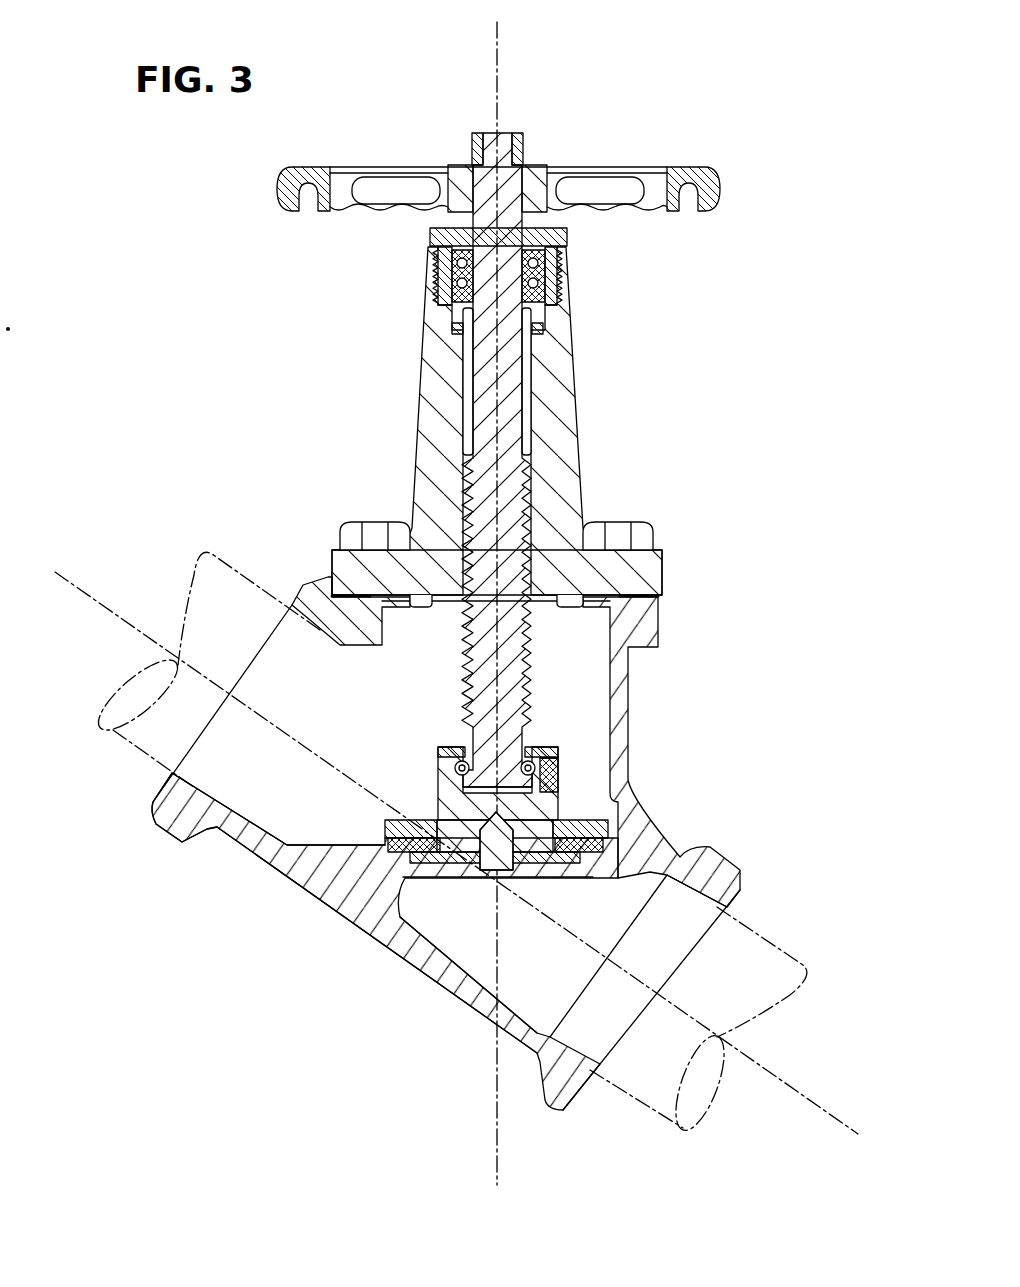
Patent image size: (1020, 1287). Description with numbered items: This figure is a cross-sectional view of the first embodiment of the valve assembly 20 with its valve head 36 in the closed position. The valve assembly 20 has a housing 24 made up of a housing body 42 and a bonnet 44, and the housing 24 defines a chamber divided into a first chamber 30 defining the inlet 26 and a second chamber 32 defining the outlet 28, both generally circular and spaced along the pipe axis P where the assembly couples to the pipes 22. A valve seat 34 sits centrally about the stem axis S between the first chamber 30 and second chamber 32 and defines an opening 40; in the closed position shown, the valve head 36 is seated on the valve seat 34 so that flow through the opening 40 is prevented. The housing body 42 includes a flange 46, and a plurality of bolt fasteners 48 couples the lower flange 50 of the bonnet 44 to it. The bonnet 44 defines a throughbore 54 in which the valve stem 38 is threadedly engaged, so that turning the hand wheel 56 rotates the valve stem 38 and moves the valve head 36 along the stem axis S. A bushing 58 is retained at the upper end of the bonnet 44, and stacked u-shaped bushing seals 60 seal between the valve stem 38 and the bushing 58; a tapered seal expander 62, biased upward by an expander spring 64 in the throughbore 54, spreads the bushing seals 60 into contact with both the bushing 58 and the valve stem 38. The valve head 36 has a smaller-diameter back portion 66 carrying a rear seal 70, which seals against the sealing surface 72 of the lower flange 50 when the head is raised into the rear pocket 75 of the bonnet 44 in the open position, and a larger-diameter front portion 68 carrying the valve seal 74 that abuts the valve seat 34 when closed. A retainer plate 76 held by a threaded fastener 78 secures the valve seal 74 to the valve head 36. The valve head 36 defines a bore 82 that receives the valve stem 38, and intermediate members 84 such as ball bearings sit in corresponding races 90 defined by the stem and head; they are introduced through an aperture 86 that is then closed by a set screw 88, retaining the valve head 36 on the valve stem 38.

The valve assembly 20 is at (714, 486).
The pipes 22 is at (128, 768).
The housing 24 is at (356, 1004).
The inlet 26 is at (693, 932).
The outlet 28 is at (277, 657).
The first chamber 30 is at (470, 968).
The second chamber 32 is at (257, 810).
The valve seat 34 is at (377, 858).
The valve head 36 is at (625, 820).
The valve stem 38 is at (513, 385).
The opening 40 is at (447, 870).
The housing body 42 is at (293, 872).
The bonnet 44 is at (570, 448).
The flange 46 is at (650, 620).
The bolt fasteners 48 is at (378, 522).
The lower flange 50 is at (652, 573).
The throughbore 54 is at (527, 412).
The hand wheel 56 is at (652, 178).
The bushing 58 is at (560, 230).
The bushing seals 60 is at (455, 270).
The seal expander 62 is at (455, 285).
The expander spring 64 is at (455, 330).
The back portion 66 is at (560, 783).
The front portion 68 is at (543, 870).
The rear seal 70 is at (540, 750).
The sealing surface 72 is at (427, 605).
The valve seal 74 is at (378, 823).
The rear pocket 75 is at (557, 600).
The retainer plate 76 is at (438, 868).
The threaded fastener 78 is at (523, 880).
The bore 82 is at (545, 795).
The intermediate members 84 is at (470, 747).
The aperture 86 is at (548, 765).
The set screw 88 is at (560, 760).
The corresponding races 90 is at (458, 770).